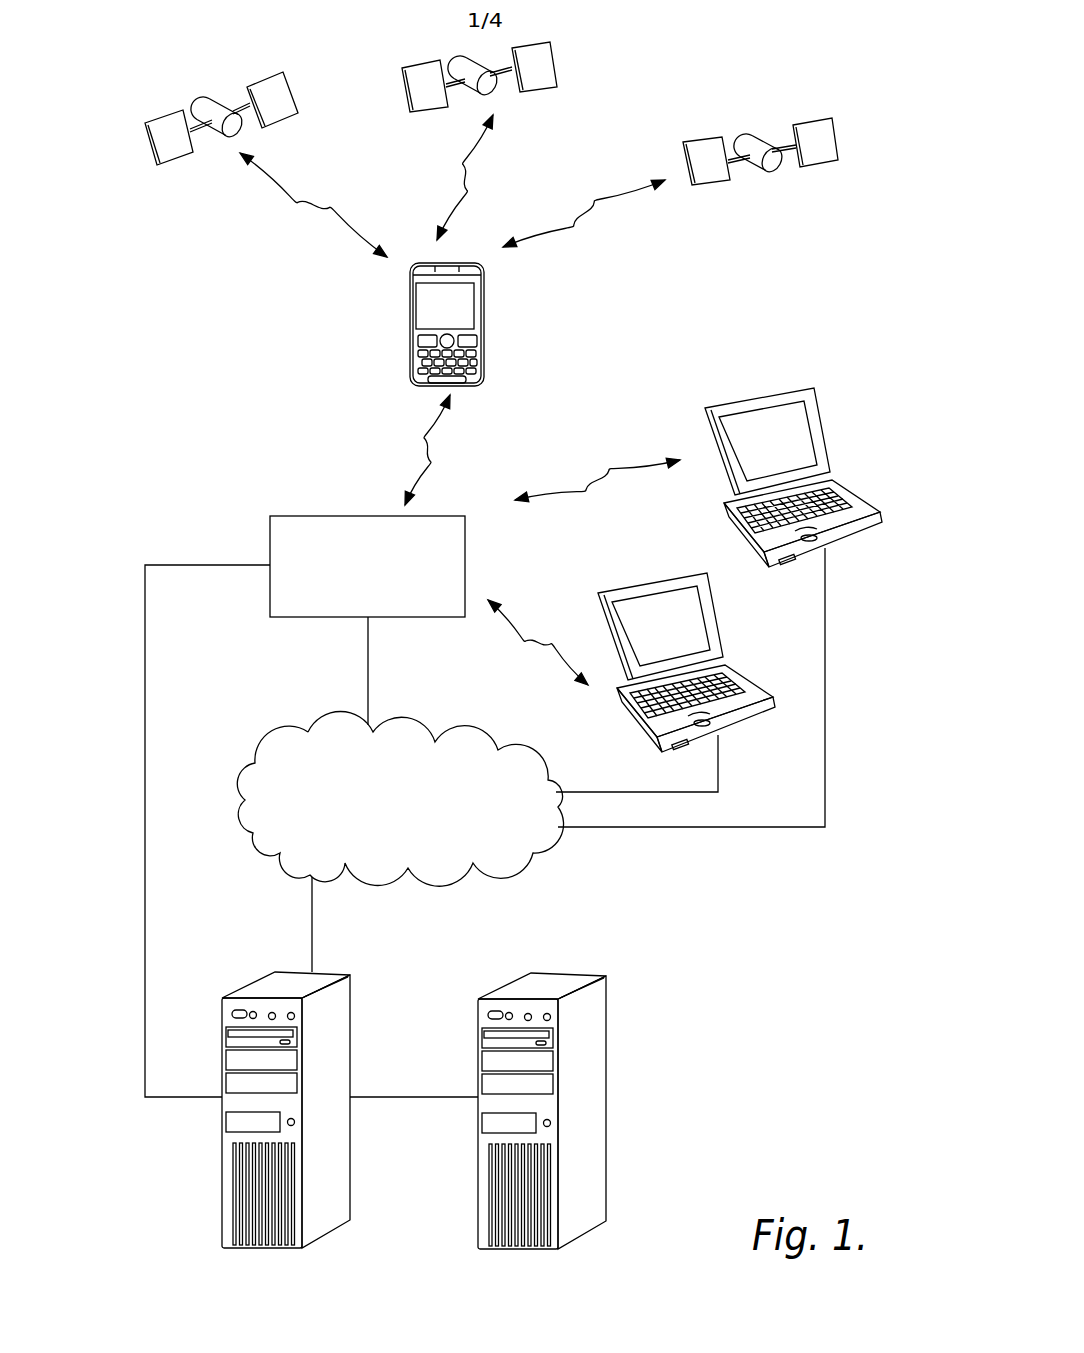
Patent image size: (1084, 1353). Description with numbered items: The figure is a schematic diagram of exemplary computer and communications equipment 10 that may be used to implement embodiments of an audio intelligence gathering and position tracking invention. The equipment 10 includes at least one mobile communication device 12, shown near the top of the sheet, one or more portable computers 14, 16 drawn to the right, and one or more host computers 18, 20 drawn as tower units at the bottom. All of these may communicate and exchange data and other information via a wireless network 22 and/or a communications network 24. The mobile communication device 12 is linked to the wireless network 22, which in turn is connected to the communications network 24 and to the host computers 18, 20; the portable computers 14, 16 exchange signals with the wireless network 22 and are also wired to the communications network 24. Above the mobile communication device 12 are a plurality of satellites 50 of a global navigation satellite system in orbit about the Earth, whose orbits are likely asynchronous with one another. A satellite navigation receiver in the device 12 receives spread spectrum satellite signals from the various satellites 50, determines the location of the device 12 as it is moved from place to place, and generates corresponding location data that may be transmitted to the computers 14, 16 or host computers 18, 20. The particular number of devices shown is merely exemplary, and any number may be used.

The computer and communications equipment 10 is at (272, 450).
The mobile communication device 12 is at (505, 312).
The portable computer 14 is at (780, 386).
The portable computer 16 is at (738, 622).
The host computer 18 is at (335, 1188).
The host computer 20 is at (593, 1152).
The wireless network 22 is at (452, 557).
The communications network 24 is at (518, 855).
The satellites 50 is at (203, 108).